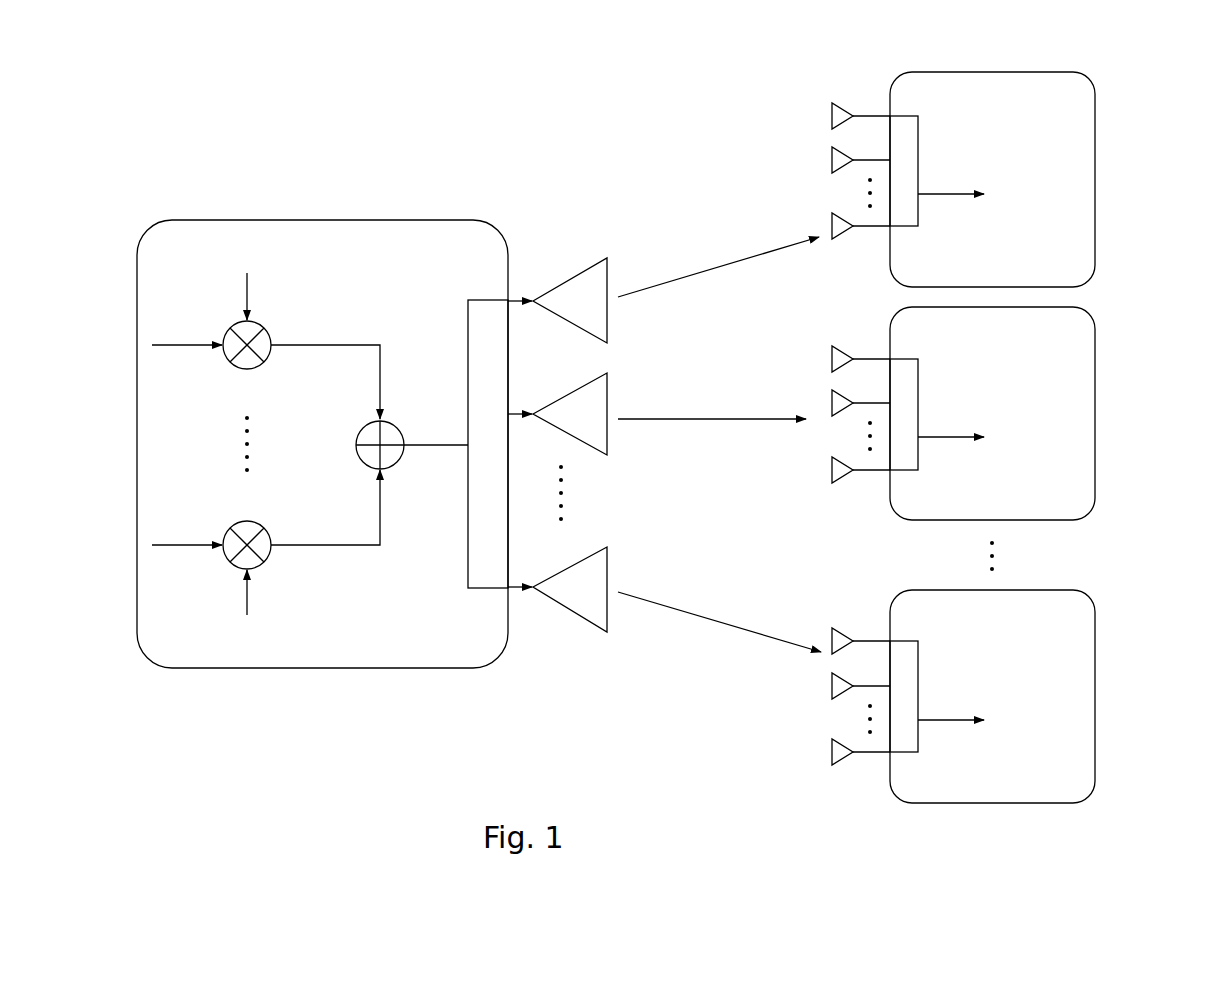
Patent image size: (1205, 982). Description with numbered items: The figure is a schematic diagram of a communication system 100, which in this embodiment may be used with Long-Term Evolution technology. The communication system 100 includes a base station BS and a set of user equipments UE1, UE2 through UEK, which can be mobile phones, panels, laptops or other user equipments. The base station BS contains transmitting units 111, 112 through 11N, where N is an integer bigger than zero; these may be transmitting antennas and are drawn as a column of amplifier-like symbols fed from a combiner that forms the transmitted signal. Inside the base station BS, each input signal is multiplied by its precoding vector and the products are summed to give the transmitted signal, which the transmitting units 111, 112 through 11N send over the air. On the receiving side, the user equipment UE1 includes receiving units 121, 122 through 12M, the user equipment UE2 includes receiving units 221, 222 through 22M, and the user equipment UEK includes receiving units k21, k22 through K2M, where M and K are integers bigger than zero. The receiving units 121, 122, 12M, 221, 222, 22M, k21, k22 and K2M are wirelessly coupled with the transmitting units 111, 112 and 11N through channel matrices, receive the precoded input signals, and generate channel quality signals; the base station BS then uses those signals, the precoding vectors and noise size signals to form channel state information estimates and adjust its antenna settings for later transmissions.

The communication system 100 is at (102, 61).
The transmitting unit 111 is at (608, 272).
The transmitting unit 112 is at (608, 387).
The transmitting unit 11N is at (608, 560).
The receiving unit 121 is at (830, 110).
The receiving unit 122 is at (830, 157).
The receiving unit 12M is at (830, 222).
The receiving unit 221 is at (830, 354).
The receiving unit 222 is at (830, 400).
The receiving unit 22M is at (830, 467).
The receiving unit k21 is at (830, 636).
The receiving unit k22 is at (830, 681).
The receiving unit K2M is at (830, 748).
The base station BS is at (136, 282).
The user equipment UE1 is at (1096, 110).
The user equipment UE2 is at (1096, 345).
The user equipment UEK is at (1096, 628).